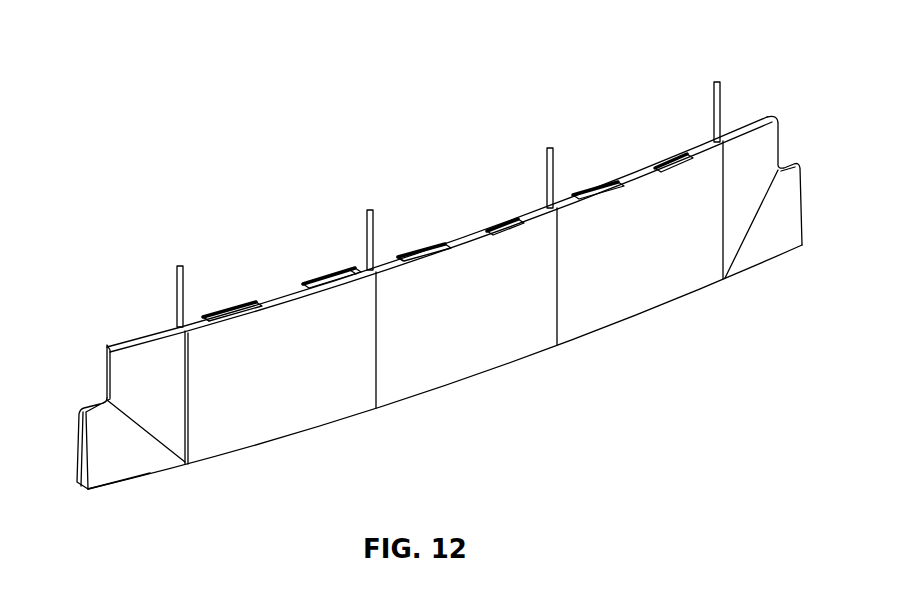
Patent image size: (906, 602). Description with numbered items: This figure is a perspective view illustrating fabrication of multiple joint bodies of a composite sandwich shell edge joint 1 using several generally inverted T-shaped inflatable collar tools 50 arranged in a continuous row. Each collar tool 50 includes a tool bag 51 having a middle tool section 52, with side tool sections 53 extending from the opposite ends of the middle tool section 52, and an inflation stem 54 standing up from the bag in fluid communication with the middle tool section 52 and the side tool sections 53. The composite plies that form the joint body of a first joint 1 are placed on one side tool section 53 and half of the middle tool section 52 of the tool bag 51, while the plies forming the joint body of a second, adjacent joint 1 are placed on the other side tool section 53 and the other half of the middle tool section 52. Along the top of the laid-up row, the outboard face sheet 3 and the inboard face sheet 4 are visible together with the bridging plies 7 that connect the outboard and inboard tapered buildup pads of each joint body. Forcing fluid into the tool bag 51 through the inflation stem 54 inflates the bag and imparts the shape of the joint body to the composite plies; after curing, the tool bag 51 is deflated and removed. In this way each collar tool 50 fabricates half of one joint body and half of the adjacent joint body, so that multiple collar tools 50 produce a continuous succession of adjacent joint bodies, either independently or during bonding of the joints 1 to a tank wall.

The composite sandwich shell edge joint 1 is at (356, 425).
The outboard face sheet 3 is at (240, 308).
The inboard face sheet 4 is at (205, 306).
The bridging plies 7 is at (285, 295).
The inverted T-shaped inflatable collar tool 50 is at (104, 405).
The tool bag 51 is at (138, 481).
The middle tool section 52 is at (137, 357).
The side tool section 53 is at (107, 443).
The inflation stem 54 is at (180, 265).